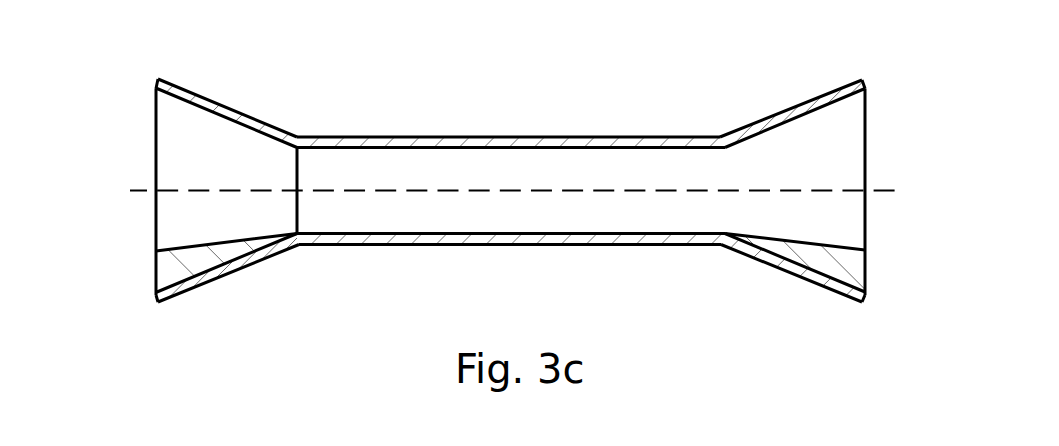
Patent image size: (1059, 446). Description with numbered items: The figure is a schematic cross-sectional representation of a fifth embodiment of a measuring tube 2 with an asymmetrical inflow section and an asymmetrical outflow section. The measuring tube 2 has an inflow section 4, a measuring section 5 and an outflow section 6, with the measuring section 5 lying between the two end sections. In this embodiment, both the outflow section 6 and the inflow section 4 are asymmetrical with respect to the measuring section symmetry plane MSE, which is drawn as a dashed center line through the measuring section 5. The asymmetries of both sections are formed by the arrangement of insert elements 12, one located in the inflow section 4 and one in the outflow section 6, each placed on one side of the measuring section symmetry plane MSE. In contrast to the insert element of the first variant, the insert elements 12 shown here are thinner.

The measuring tube 2 is at (514, 176).
The inflow section 4 is at (208, 137).
The measuring section 5 is at (483, 168).
The outflow section 6 is at (802, 137).
The insert element 12 is at (160, 273).
The measuring section symmetry plane MSE is at (893, 190).